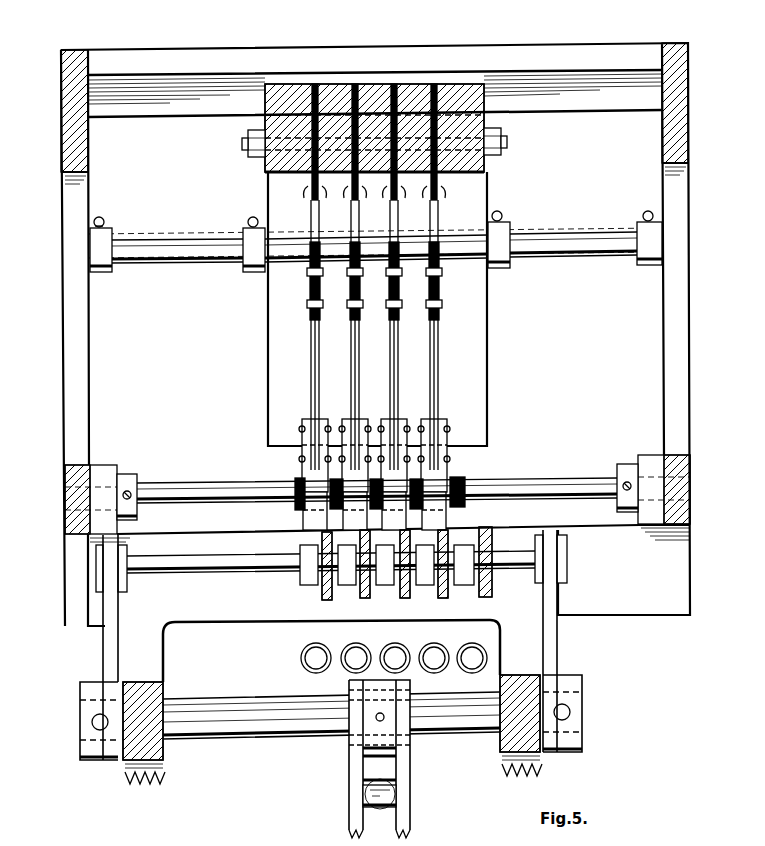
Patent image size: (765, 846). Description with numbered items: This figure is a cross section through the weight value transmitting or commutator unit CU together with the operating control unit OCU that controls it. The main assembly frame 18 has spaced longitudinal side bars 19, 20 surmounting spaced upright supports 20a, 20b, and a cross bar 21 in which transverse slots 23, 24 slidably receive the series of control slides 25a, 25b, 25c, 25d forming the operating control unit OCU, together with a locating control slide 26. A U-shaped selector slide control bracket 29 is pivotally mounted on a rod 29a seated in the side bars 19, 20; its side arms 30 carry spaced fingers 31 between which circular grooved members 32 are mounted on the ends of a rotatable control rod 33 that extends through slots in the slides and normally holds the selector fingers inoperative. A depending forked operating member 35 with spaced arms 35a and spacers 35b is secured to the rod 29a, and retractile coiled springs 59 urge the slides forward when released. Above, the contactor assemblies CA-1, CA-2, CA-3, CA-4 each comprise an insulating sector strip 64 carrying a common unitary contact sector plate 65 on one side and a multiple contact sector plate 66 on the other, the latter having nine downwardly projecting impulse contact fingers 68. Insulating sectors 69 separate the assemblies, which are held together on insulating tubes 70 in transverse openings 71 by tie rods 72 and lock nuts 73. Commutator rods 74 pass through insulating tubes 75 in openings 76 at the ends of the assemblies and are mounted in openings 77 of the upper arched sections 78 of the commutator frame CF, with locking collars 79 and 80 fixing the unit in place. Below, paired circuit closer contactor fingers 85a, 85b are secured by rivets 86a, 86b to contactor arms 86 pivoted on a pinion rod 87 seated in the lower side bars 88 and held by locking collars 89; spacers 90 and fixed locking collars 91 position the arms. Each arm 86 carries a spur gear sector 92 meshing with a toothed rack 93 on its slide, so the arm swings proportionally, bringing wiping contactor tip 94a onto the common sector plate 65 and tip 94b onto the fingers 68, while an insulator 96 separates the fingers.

The commutator frame CF is at (690, 68).
The commutator unit CU is at (488, 336).
The operating control unit OCU is at (322, 588).
The contactor assembly CA-1 is at (322, 88).
The contactor assembly CA-2 is at (360, 86).
The contactor assembly CA-3 is at (400, 86).
The contactor assembly CA-4 is at (438, 86).
The main assembly frame 18 is at (146, 652).
The longitudinal side bar 19 is at (500, 684).
The longitudinal side bar 20 is at (148, 694).
The upright support 20a is at (542, 764).
The upright support 20b is at (166, 776).
The cross bar 21 is at (66, 566).
The transverse slot 23 is at (345, 570).
The transverse slot 24 is at (444, 598).
The control slide 25a is at (486, 598).
The control slide 25b is at (406, 598).
The control slide 25c is at (366, 598).
The control slide 25d is at (324, 592).
The locating control slide 26 is at (484, 534).
The selector slide control bracket 29 is at (82, 688).
The rod 29a is at (278, 720).
The side arm 30 is at (104, 650).
The spaced finger 31 is at (97, 556).
The circular grooved member 32 is at (120, 565).
The control rod 33 is at (210, 575).
The forked operating member 35 is at (345, 686).
The spaced arm 35a is at (354, 764).
The spacer 35b is at (392, 790).
The retractile coiled spring 59 is at (478, 646).
The insulating sector strip 64 is at (315, 92).
The common unitary contact sector plate 65 is at (320, 92).
The multiple contact sector plate 66 is at (312, 92).
The impulse contact finger 68 is at (308, 184).
The insulating sector 69 is at (280, 100).
The insulating tube 70 is at (262, 156).
The transverse opening 71 is at (266, 108).
The contactor assembly tie rod 72 is at (242, 147).
The lock nut 73 is at (252, 130).
The commutator rod 74 is at (190, 258).
The insulating tube 75 is at (300, 262).
The transverse opening 76 is at (308, 190).
The opening 77 is at (90, 265).
The upper arched section 78 is at (72, 214).
The locking collar 79 is at (246, 272).
The locking collar 80 is at (112, 272).
The circuit closer contactor finger 85a is at (310, 232).
The circuit closer contactor finger 85b is at (350, 236).
The contactor arm 86 is at (320, 366).
The rivet 86a is at (308, 304).
The rivet 86b is at (308, 272).
The pinion rod 87 is at (186, 484).
The lower side bar 88 is at (72, 474).
The locking collar 89 is at (130, 478).
The spacer 90 is at (336, 450).
The fixed locking collar 91 is at (296, 482).
The spur gear sector 92 is at (296, 508).
The toothed rack 93 is at (330, 520).
The wiping contactor tip 94a is at (346, 192).
The wiping contactor tip 94b is at (310, 190).
The insulator 96 is at (352, 300).